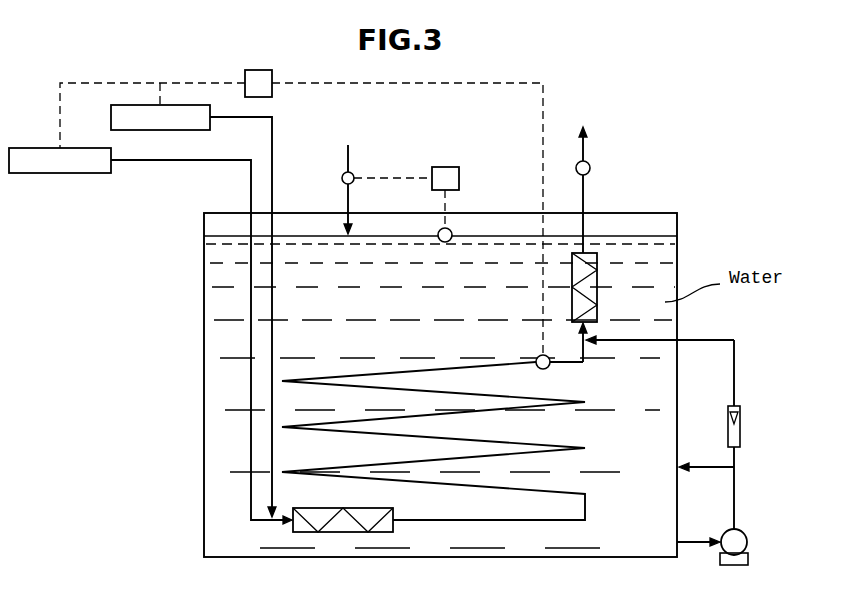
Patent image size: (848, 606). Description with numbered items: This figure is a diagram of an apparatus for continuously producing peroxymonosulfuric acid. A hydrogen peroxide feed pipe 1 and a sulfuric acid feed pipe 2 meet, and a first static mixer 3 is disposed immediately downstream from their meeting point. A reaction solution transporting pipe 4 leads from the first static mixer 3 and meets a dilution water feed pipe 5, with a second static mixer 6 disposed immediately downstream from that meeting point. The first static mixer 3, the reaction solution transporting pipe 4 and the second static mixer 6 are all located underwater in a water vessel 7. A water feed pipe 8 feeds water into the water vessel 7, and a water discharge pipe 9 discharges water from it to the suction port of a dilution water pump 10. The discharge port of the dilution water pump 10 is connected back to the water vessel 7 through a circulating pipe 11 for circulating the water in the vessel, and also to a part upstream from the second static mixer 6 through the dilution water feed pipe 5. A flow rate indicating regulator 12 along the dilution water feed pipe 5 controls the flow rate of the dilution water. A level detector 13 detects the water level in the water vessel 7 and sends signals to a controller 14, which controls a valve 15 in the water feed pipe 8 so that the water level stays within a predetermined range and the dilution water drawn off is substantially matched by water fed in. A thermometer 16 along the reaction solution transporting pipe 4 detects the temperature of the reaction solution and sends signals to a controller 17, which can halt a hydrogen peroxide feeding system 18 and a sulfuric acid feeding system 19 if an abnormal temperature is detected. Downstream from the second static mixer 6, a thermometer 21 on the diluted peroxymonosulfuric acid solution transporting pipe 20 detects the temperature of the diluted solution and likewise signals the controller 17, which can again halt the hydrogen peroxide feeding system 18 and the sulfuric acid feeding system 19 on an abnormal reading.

The hydrogen peroxide feed pipe 1 is at (274, 195).
The sulfuric acid feed pipe 2 is at (250, 196).
The first static mixer 3 is at (344, 512).
The reaction solution transporting pipe 4 is at (456, 366).
The dilution water feed pipe 5 is at (627, 342).
The second static mixer 6 is at (598, 284).
The water vessel 7 is at (455, 557).
The water feed pipe 8 is at (351, 197).
The water discharge pipe 9 is at (694, 545).
The dilution water pump 10 is at (748, 541).
The circulating pipe 11 is at (711, 468).
The flow rate indicating regulator 12 is at (741, 421).
The level detector 13 is at (450, 241).
The controller 14 is at (460, 178).
The valve 15 is at (354, 176).
The thermometer 16 is at (538, 357).
The controller 17 is at (273, 78).
The hydrogen peroxide feeding system 18 is at (160, 130).
The sulfuric acid feeding system 19 is at (60, 174).
The diluted peroxymonosulfuric acid solution transporting pipe 20 is at (585, 204).
The thermometer 21 is at (590, 166).